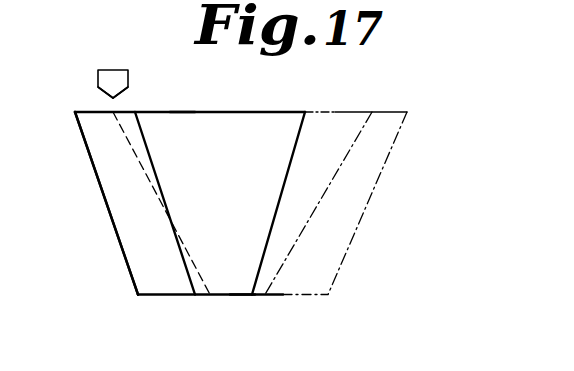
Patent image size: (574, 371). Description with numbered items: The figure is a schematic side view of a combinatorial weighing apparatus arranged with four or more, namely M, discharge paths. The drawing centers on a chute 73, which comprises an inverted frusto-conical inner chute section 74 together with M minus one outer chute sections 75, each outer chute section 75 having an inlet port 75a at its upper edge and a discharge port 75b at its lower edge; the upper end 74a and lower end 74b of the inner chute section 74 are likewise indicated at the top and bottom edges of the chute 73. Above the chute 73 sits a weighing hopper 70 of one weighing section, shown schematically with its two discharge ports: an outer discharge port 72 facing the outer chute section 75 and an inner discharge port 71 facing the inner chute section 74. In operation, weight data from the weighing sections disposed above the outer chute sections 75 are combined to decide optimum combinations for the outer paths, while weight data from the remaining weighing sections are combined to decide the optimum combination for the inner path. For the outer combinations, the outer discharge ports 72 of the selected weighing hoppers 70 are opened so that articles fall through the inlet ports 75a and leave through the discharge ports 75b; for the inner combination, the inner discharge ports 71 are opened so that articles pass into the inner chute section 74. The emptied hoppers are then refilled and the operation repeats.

The weighing hopper 70 is at (105, 69).
The inner discharge port 71 is at (118, 98).
The outer discharge port 72 is at (104, 98).
The chute 73 is at (100, 226).
The inner chute section 74 is at (141, 162).
The fold line upper end 74a is at (182, 110).
The fold line lower end 74b is at (242, 298).
The outer chute section 75 is at (92, 162).
The inlet port 75a is at (233, 110).
The discharge port 75b is at (157, 298).